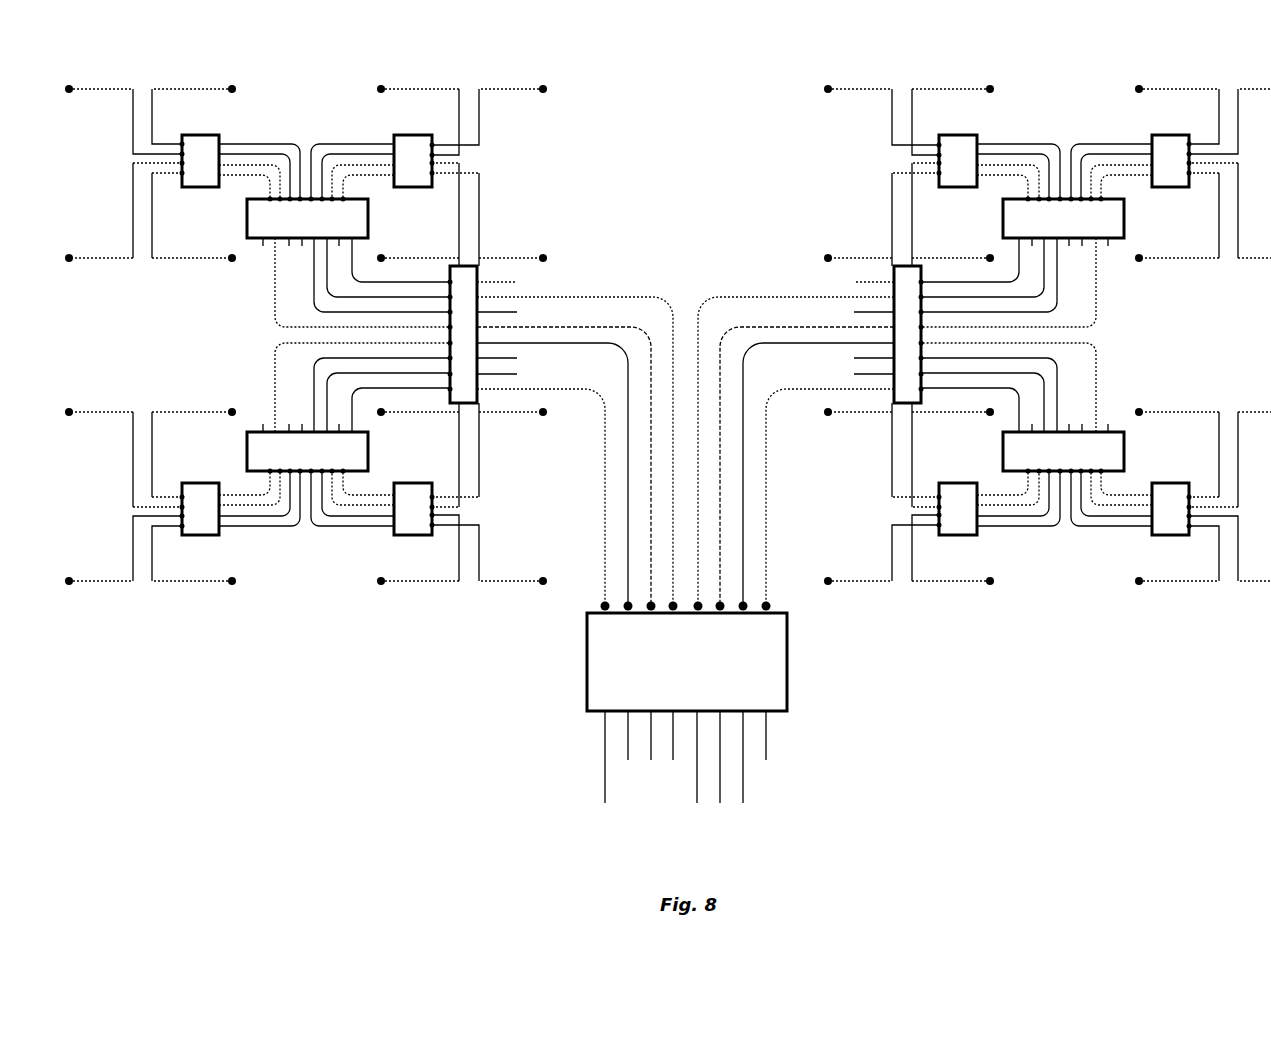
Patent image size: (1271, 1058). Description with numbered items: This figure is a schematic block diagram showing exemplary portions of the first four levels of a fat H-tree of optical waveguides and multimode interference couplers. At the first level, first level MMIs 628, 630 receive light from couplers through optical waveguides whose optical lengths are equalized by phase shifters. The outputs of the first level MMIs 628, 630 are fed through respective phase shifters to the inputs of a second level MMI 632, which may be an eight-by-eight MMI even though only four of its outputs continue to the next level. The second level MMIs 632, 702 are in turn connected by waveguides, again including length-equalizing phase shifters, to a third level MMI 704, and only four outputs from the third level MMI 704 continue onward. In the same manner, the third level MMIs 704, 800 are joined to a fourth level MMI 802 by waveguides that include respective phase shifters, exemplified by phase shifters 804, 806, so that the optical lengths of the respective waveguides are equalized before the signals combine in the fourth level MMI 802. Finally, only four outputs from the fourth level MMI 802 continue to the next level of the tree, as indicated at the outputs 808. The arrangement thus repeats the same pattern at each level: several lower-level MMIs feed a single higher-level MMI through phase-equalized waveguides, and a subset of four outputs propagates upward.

The first level MMI 628 is at (201, 134).
The first level MMI 630 is at (406, 134).
The second level MMI 632 is at (368, 221).
The second level MMI 702 is at (368, 450).
The third level MMI 704 is at (477, 268).
The third level MMI 800 is at (895, 269).
The fourth level MMI 802 is at (787, 665).
The phase shifter 804 is at (605, 604).
The phase shifter 806 is at (766, 603).
The outputs from the fourth level MMI 808 is at (777, 758).